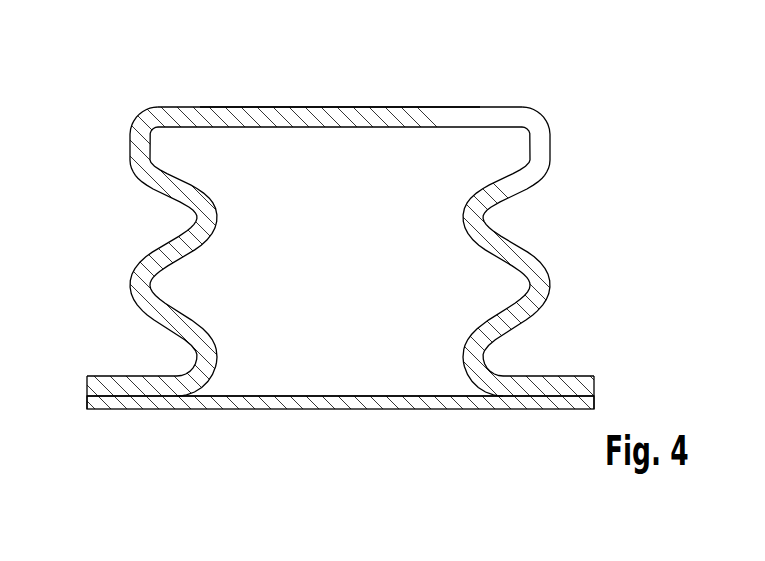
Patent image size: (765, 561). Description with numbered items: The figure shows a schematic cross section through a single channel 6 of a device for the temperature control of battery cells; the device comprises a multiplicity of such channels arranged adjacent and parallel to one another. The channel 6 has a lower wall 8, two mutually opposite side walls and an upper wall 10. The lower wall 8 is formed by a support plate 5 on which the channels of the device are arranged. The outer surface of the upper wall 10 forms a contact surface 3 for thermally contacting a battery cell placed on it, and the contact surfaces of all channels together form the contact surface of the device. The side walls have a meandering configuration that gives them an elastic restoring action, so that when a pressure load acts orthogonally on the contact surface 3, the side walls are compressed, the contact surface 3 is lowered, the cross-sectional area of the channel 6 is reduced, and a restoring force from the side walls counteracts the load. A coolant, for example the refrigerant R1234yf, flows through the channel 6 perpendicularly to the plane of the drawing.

The contact surface 3 is at (335, 97).
The upper wall 10 is at (233, 93).
The support plate 5 is at (87, 399).
The lower wall 8 is at (338, 424).
The channel 6 is at (581, 68).